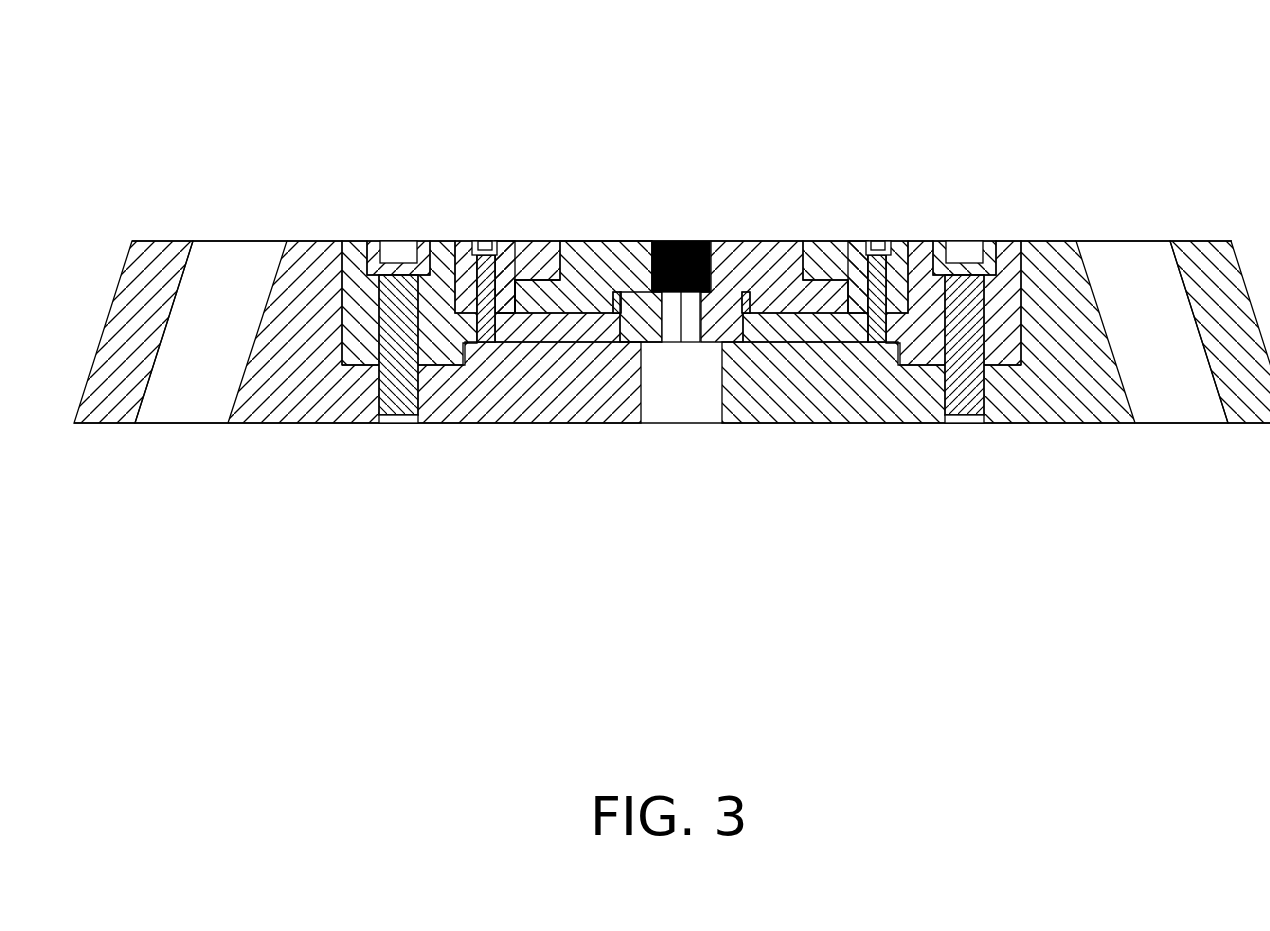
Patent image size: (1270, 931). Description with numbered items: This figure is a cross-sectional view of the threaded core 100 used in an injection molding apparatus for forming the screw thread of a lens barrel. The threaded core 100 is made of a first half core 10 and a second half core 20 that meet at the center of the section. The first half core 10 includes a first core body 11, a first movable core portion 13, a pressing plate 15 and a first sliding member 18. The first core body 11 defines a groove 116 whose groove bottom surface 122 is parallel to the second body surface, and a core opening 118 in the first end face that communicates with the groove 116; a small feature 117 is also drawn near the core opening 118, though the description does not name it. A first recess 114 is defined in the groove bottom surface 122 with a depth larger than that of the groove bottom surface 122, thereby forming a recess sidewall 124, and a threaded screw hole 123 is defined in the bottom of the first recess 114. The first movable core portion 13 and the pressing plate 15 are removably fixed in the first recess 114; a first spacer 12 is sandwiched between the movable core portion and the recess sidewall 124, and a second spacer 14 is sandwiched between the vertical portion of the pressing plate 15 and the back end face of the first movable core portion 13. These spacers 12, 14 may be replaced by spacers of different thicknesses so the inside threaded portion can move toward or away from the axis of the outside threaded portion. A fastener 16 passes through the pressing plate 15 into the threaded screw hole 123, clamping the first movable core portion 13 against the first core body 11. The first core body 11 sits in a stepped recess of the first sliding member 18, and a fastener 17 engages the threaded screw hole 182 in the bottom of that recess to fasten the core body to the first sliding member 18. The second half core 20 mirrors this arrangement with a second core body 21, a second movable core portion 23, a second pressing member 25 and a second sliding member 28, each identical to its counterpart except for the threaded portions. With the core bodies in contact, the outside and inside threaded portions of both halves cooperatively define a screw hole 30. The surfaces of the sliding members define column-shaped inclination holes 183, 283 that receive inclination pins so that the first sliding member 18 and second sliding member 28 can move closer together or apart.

The threaded core 100 is at (686, 66).
The first half core 10 is at (258, 158).
The second half core 20 is at (1057, 158).
The first core body 11 is at (440, 262).
The first spacer 12 is at (635, 300).
The first movable core portion 13 is at (580, 262).
The second spacer 14 is at (565, 330).
The pressing plate 15 is at (508, 265).
The fastener 16 is at (483, 345).
The fastener 17 is at (345, 420).
The first sliding member 18 is at (307, 265).
The threaded screw hole 182 is at (400, 418).
The inclination hole 183 is at (222, 265).
The first recess 114 is at (572, 322).
The groove 116 is at (645, 278).
The protrusion of first mold core 117 is at (619, 305).
The core opening 118 is at (661, 300).
The groove bottom surface 122 is at (625, 285).
The threaded screw hole 123 is at (508, 335).
The recess sidewall 124 is at (585, 262).
The second core body 21 is at (912, 262).
The second movable core portion 23 is at (783, 265).
The second pressing member 25 is at (850, 262).
The second sliding member 28 is at (1058, 262).
The inclination hole 283 is at (1128, 277).
The screw hole 30 is at (675, 243).